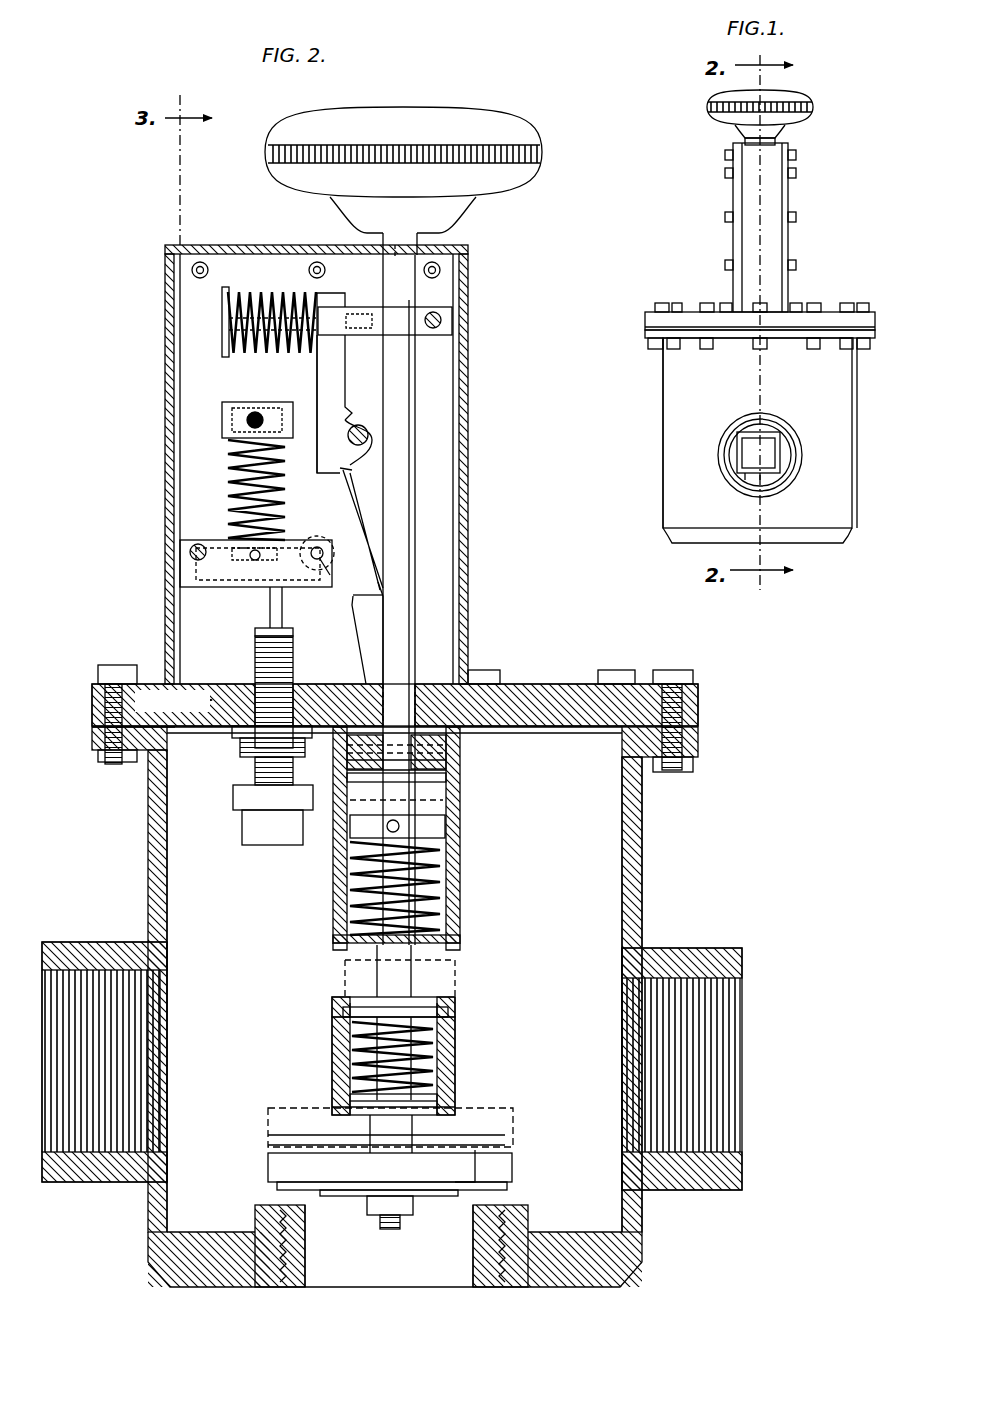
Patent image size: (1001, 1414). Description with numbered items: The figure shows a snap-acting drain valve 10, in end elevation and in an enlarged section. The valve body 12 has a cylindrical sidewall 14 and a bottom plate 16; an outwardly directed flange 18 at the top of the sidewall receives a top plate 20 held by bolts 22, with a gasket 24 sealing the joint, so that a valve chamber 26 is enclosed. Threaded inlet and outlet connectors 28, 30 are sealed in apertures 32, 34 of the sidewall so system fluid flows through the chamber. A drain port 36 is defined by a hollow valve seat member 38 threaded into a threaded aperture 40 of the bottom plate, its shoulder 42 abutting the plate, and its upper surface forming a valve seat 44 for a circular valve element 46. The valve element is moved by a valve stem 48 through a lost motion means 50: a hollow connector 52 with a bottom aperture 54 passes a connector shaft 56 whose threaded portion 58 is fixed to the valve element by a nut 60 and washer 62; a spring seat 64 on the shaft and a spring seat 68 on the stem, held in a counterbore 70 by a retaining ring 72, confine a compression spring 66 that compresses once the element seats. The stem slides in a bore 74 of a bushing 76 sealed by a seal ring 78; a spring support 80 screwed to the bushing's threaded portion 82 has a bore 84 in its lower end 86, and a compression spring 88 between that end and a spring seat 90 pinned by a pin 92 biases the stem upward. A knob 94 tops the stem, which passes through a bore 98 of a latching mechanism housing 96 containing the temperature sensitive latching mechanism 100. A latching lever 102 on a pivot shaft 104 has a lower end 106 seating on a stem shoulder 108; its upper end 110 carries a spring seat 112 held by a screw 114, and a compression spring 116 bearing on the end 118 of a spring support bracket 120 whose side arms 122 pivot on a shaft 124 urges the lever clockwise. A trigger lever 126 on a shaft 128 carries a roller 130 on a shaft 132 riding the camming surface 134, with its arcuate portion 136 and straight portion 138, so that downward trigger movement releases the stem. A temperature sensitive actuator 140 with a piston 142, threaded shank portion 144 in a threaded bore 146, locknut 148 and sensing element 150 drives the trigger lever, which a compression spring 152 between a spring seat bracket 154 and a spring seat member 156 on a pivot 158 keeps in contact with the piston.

In FIG. 2, the snap-acting drain valve 10 is at (542, 682).
In FIG. 1, the snap-acting drain valve 10 is at (832, 310).
In FIG. 2, the valve body 12 is at (642, 828).
In FIG. 1, the valve body 12 is at (852, 415).
In FIG. 2, the sidewall 14 is at (642, 880).
In FIG. 1, the sidewall 14 is at (663, 405).
In FIG. 2, the bottom plate 16 is at (562, 1287).
In FIG. 1, the bottom plate 16 is at (838, 543).
In FIG. 2, the flange 18 is at (698, 745).
In FIG. 1, the flange 18 is at (690, 338).
In FIG. 2, the top plate 20 is at (698, 705).
In FIG. 1, the top plate 20 is at (700, 312).
In FIG. 2, the bolts 22 is at (117, 665).
In FIG. 1, the bolts 22 is at (662, 303).
In FIG. 2, the gasket 24 is at (170, 722).
In FIG. 1, the gasket 24 is at (645, 330).
In FIG. 2, the valve chamber 26 is at (585, 790).
In FIG. 2, the inlet connector 28 is at (90, 942).
In FIG. 2, the outlet connector 30 is at (708, 948).
In FIG. 1, the outlet connector 30 is at (786, 424).
In FIG. 2, the aperture 32 is at (168, 962).
In FIG. 2, the aperture 34 is at (620, 962).
In FIG. 2, the drain port 36 is at (475, 1290).
In FIG. 2, the valve seat member 38 is at (335, 1290).
In FIG. 2, the threaded aperture 40 is at (280, 1287).
In FIG. 2, the shoulder 42 is at (528, 1220).
In FIG. 2, the valve seat 44 is at (470, 1180).
In FIG. 2, the valve element 46 is at (512, 1168).
In FIG. 2, the valve stem 48 is at (383, 650).
In FIG. 2, the lost motion means 50 is at (455, 1040).
In FIG. 1, the lost motion means 50 is at (745, 445).
In FIG. 2, the connector 52 is at (333, 1040).
In FIG. 2, the aperture 54 is at (362, 1108).
In FIG. 2, the connector shaft 56 is at (468, 1112).
In FIG. 2, the threaded portion 58 is at (395, 1230).
In FIG. 2, the nut 60 is at (380, 1216).
In FIG. 2, the washer 62 is at (358, 1197).
In FIG. 2, the spring seat 64 is at (432, 1094).
In FIG. 2, the compression spring 66 is at (437, 1060).
In FIG. 2, the spring seat 68 is at (412, 1008).
In FIG. 2, the counterbore 70 is at (345, 1012).
In FIG. 2, the retaining ring 72 is at (342, 1000).
In FIG. 2, the bore 74 is at (404, 740).
In FIG. 2, the bushing 76 is at (430, 740).
In FIG. 2, the seal ring 78 is at (446, 760).
In FIG. 2, the spring support 80 is at (447, 828).
In FIG. 2, the threaded portion 82 is at (350, 745).
In FIG. 2, the bore 84 is at (340, 945).
In FIG. 2, the lower end 86 is at (452, 945).
In FIG. 2, the compression spring 88 is at (446, 890).
In FIG. 2, the spring seat 90 is at (340, 830).
In FIG. 2, the pin 92 is at (400, 828).
In FIG. 2, the knob 94 is at (512, 126).
In FIG. 1, the knob 94 is at (805, 104).
In FIG. 2, the latching mechanism housing 96 is at (468, 392).
In FIG. 1, the latching mechanism housing 96 is at (733, 240).
In FIG. 2, the bore 98 is at (420, 242).
In FIG. 2, the temperature sensitive latching mechanism 100 is at (313, 382).
In FIG. 2, the latching lever 102 is at (350, 404).
In FIG. 2, the pivot shaft 104 is at (358, 424).
In FIG. 1, the pivot shaft 104 is at (796, 217).
In FIG. 2, the lower end 106 is at (355, 608).
In FIG. 2, the shoulder 108 is at (390, 594).
In FIG. 2, the upper end 110 is at (345, 296).
In FIG. 2, the spring seat 112 is at (318, 296).
In FIG. 2, the screw 114 is at (356, 313).
In FIG. 2, the compression spring 116 is at (283, 292).
In FIG. 2, the end 118 is at (222, 300).
In FIG. 2, the spring support bracket 120 is at (236, 330).
In FIG. 2, the side arms 122 is at (452, 312).
In FIG. 2, the shaft 124 is at (441, 320).
In FIG. 1, the shaft 124 is at (796, 174).
In FIG. 2, the trigger lever 126 is at (185, 582).
In FIG. 2, the shaft 128 is at (200, 544).
In FIG. 1, the shaft 128 is at (796, 265).
In FIG. 2, the roller 130 is at (314, 546).
In FIG. 2, the shaft 132 is at (320, 560).
In FIG. 2, the camming surface 134 is at (365, 508).
In FIG. 2, the arcuate portion 136 is at (352, 472).
In FIG. 2, the straight portion 138 is at (383, 582).
In FIG. 2, the temperature sensitive actuator 140 is at (245, 795).
In FIG. 2, the piston 142 is at (270, 612).
In FIG. 2, the threaded shank portion 144 is at (256, 636).
In FIG. 2, the threaded bore 146 is at (258, 672).
In FIG. 2, the locknut 148 is at (250, 748).
In FIG. 2, the temperature sensing element 150 is at (262, 838).
In FIG. 2, the compression spring 152 is at (245, 478).
In FIG. 2, the spring seat bracket 154 is at (240, 418).
In FIG. 2, the spring seat member 156 is at (250, 554).
In FIG. 2, the pivot 158 is at (240, 558).